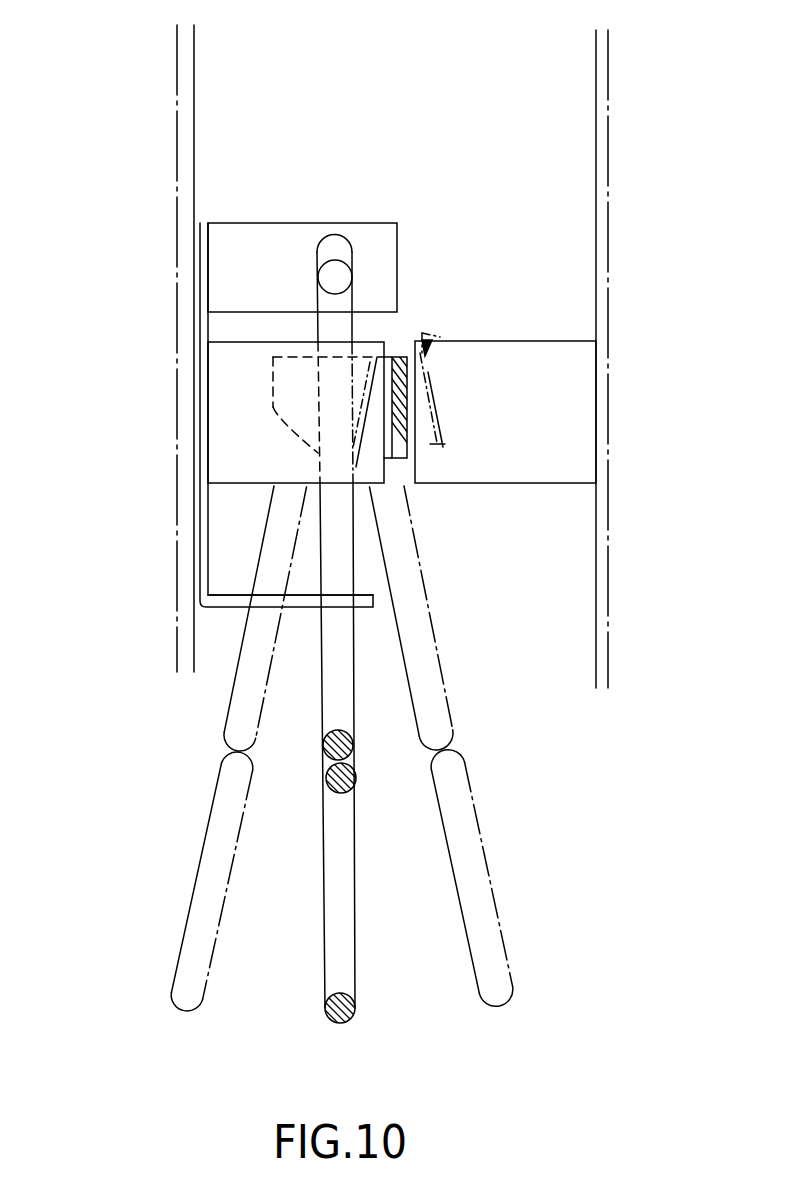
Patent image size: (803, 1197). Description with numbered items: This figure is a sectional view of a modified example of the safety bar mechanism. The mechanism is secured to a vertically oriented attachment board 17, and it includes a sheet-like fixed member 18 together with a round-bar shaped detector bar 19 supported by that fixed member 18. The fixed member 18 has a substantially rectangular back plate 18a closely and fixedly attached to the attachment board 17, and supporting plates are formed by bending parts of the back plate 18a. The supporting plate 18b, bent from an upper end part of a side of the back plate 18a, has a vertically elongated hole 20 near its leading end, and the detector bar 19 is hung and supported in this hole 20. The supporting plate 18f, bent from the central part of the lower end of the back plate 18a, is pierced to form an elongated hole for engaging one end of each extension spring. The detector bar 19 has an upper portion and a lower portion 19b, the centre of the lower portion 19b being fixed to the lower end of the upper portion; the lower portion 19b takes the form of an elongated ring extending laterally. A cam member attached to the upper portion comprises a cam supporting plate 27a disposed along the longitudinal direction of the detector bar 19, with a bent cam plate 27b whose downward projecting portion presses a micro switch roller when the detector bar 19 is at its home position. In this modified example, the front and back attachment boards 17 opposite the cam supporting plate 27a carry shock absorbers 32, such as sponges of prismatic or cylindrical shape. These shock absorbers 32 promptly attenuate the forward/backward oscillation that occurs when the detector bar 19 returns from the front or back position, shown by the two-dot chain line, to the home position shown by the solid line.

The attachment board 17 is at (177, 97).
The fixed member 18 is at (272, 428).
The back plate 18a is at (215, 484).
The supporting plate 18b is at (380, 228).
The supporting plate 18f is at (223, 608).
The detector bar 19 is at (352, 653).
The lower portion 19b is at (358, 922).
The vertically elongated hole 20 is at (336, 237).
The cam supporting plate 27a is at (412, 367).
The cam plate 27b is at (273, 383).
The shock absorber 32 is at (227, 467).